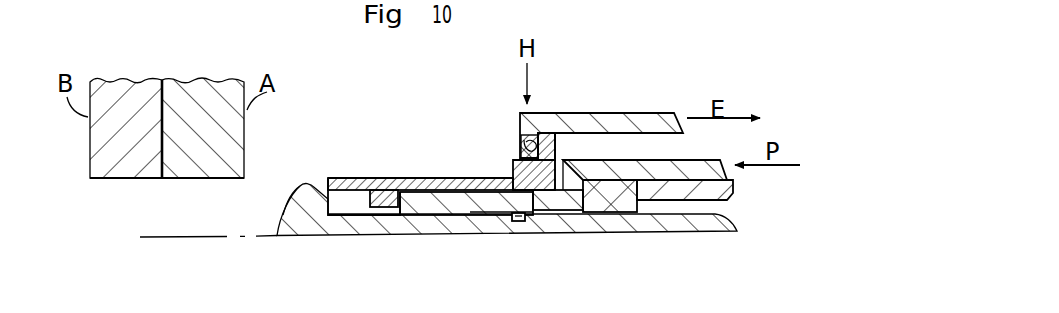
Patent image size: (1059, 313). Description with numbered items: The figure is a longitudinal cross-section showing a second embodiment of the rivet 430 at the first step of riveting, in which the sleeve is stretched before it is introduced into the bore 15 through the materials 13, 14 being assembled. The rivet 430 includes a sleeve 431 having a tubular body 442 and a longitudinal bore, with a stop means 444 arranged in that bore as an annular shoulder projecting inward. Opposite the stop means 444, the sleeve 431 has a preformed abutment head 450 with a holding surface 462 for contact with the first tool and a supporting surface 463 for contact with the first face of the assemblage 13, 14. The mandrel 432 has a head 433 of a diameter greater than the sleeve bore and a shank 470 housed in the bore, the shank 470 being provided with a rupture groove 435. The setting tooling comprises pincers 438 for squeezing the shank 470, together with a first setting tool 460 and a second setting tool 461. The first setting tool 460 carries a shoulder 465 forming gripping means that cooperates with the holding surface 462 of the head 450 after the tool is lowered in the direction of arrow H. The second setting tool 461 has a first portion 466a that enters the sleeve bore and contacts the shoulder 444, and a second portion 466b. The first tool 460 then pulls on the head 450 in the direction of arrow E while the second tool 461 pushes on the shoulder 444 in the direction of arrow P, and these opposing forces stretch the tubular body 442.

The material being assembled 13 is at (132, 82).
The material being assembled 14 is at (222, 87).
The bore 15 is at (173, 180).
The rivet 430 is at (368, 160).
The sleeve 431 is at (427, 178).
The mandrel 432 is at (295, 238).
The head of the mandrel 433 is at (283, 208).
The rupture groove 435 is at (523, 218).
The pincers 438 is at (733, 191).
The tubular body 442 is at (462, 178).
The stop means 444 is at (390, 207).
The abutment head 450 is at (558, 151).
The first setting tool 460 is at (653, 117).
The second setting tool 461 is at (707, 162).
The holding surface 462 is at (532, 132).
The supporting surface 463 is at (512, 167).
The shoulder 465 is at (521, 139).
The first portion 466a is at (425, 203).
The second portion 466b is at (610, 203).
The shank of the mandrel 470 is at (480, 225).